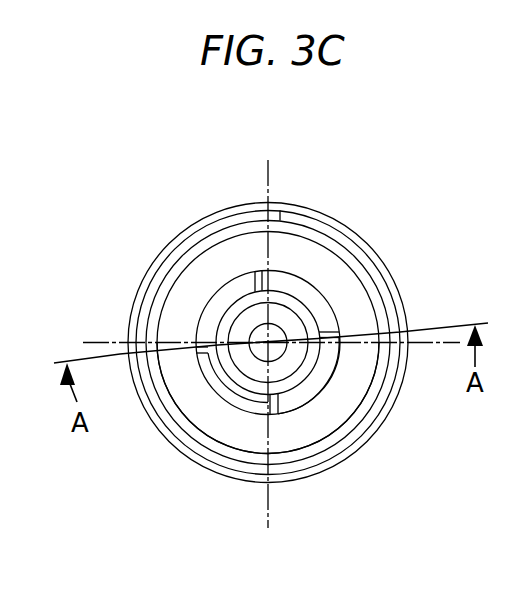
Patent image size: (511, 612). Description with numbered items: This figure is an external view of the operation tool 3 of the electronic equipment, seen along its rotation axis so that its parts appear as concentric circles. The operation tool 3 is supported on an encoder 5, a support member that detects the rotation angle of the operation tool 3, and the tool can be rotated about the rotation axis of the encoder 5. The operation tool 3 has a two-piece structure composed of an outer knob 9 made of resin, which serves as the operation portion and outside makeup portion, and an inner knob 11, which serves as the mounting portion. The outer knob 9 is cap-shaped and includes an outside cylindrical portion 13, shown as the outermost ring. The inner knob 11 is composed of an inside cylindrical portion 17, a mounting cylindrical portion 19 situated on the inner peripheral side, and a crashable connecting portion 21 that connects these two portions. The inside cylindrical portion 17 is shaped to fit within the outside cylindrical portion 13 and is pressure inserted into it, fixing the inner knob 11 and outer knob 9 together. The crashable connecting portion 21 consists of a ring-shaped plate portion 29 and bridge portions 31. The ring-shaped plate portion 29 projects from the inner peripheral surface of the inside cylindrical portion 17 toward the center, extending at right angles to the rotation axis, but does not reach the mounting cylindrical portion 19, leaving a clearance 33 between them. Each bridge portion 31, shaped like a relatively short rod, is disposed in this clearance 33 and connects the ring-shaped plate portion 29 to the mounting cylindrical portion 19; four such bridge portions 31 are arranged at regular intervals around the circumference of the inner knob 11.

The operation tool 3 is at (91, 141).
The encoder 5 is at (222, 318).
The outer knob 9 is at (188, 220).
The inner knob 11 is at (240, 218).
The outside cylindrical portion 13 is at (304, 216).
The inside cylindrical portion 17 is at (332, 243).
The mounting cylindrical portion 19 is at (308, 313).
The crashable connecting portion 21 is at (309, 403).
The ring-shaped plate portion 29 is at (325, 417).
The bridge portion 31 is at (281, 420).
The clearance 33 is at (223, 393).